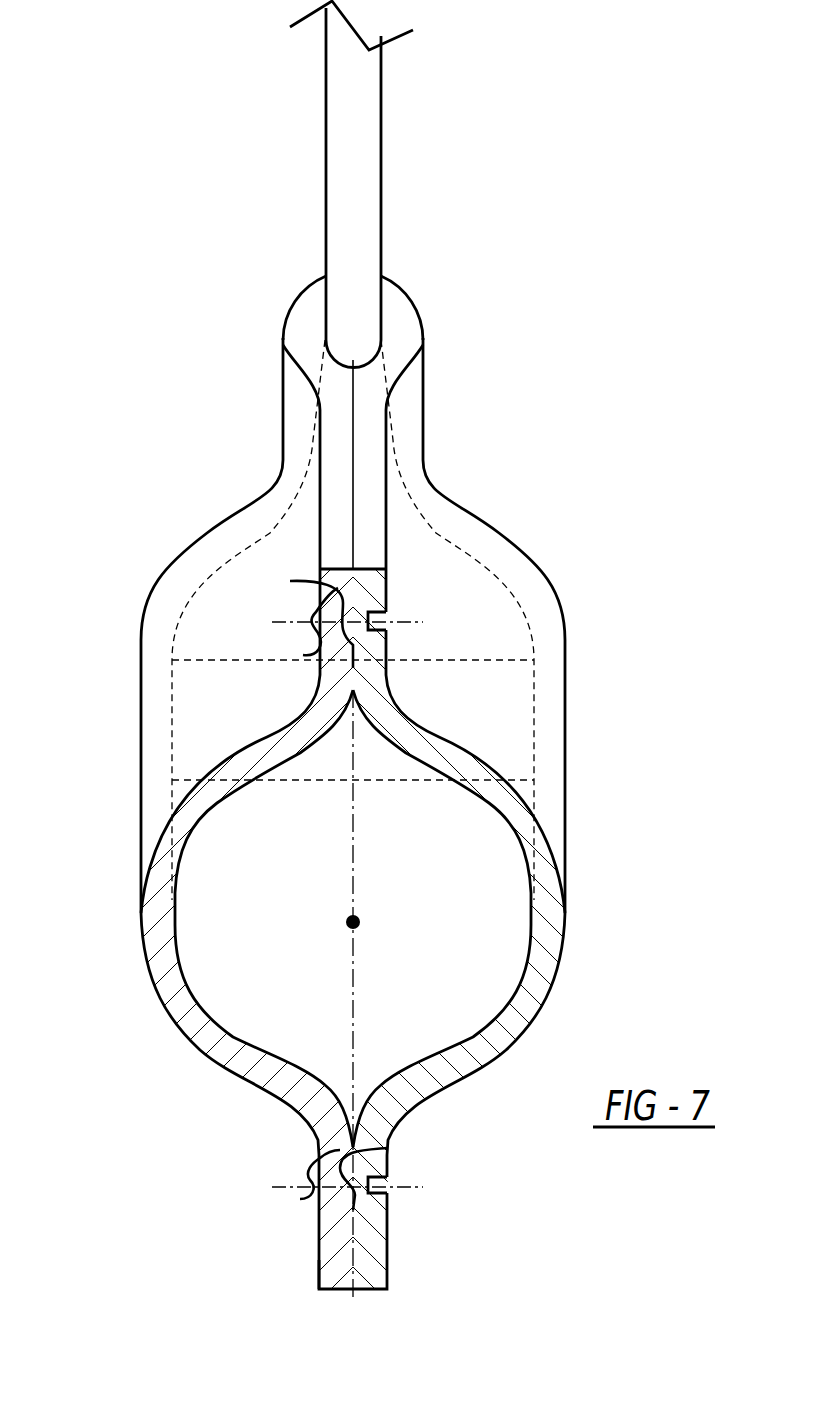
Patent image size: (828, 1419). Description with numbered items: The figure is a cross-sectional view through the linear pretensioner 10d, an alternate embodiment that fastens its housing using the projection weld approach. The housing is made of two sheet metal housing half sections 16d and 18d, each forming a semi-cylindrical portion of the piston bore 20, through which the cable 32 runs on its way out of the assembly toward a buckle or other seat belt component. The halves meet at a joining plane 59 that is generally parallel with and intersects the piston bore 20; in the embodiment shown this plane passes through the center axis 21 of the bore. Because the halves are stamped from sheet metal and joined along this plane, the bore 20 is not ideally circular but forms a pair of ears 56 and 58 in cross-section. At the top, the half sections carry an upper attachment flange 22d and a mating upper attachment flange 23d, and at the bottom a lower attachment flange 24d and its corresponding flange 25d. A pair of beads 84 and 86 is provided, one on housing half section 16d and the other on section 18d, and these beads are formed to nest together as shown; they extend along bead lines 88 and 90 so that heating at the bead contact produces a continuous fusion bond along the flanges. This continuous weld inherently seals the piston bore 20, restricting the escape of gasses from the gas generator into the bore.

The linear pretensioner 10d is at (592, 470).
The cable 32 is at (382, 156).
The upper attachment flange 22d is at (403, 379).
The upper attachment flange 23d is at (283, 436).
The housing half section 18d is at (141, 667).
The housing half section 16d is at (565, 663).
The bead 86 is at (290, 581).
The bead 84 is at (303, 655).
The bead line 88 is at (415, 622).
The ear 56 is at (373, 730).
The ear 58 is at (337, 1112).
The center axis 21 is at (360, 916).
The joining plane 59 is at (353, 978).
The piston bore 20 is at (278, 1003).
The bead line 90 is at (408, 1185).
The lower attachment flange 24d is at (387, 1216).
The lower attachment flange 25d is at (319, 1223).